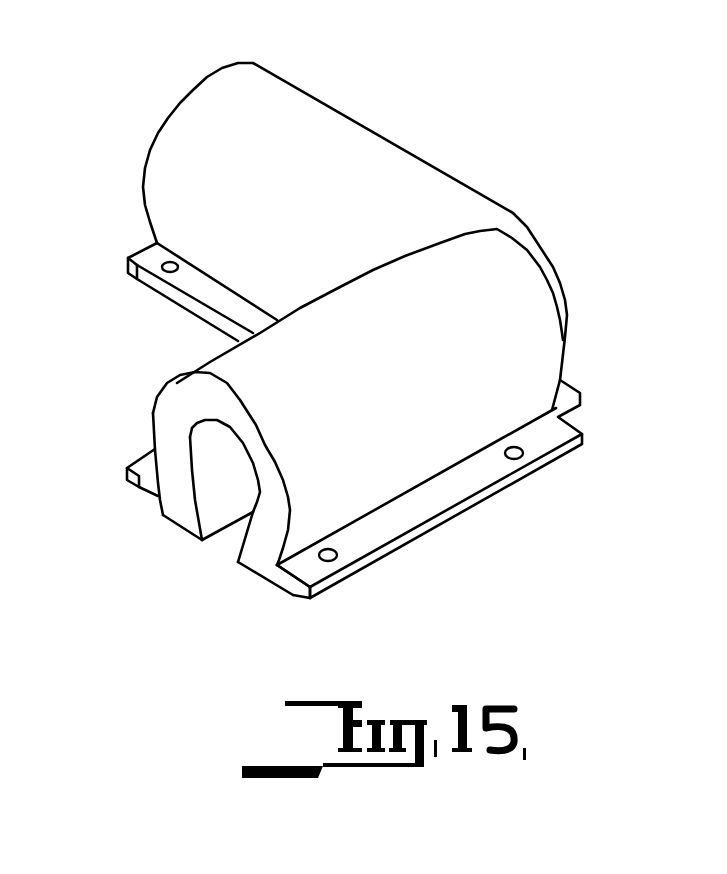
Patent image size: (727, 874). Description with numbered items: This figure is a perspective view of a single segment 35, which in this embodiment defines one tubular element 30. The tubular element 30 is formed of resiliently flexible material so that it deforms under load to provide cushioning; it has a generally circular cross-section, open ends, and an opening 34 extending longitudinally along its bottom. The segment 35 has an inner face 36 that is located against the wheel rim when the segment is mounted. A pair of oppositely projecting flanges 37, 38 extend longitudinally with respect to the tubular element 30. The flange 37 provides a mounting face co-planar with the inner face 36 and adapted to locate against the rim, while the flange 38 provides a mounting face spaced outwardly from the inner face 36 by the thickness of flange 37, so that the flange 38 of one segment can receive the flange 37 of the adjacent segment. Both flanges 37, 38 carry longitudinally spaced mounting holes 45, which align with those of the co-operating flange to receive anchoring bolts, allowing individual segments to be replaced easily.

The tubular element 30 is at (160, 413).
The opening 34 is at (220, 547).
The segment 35 is at (423, 152).
The inner face 36 is at (177, 528).
The flange 37 is at (292, 594).
The flange 38 is at (135, 486).
The mounting hole 45 is at (163, 270).